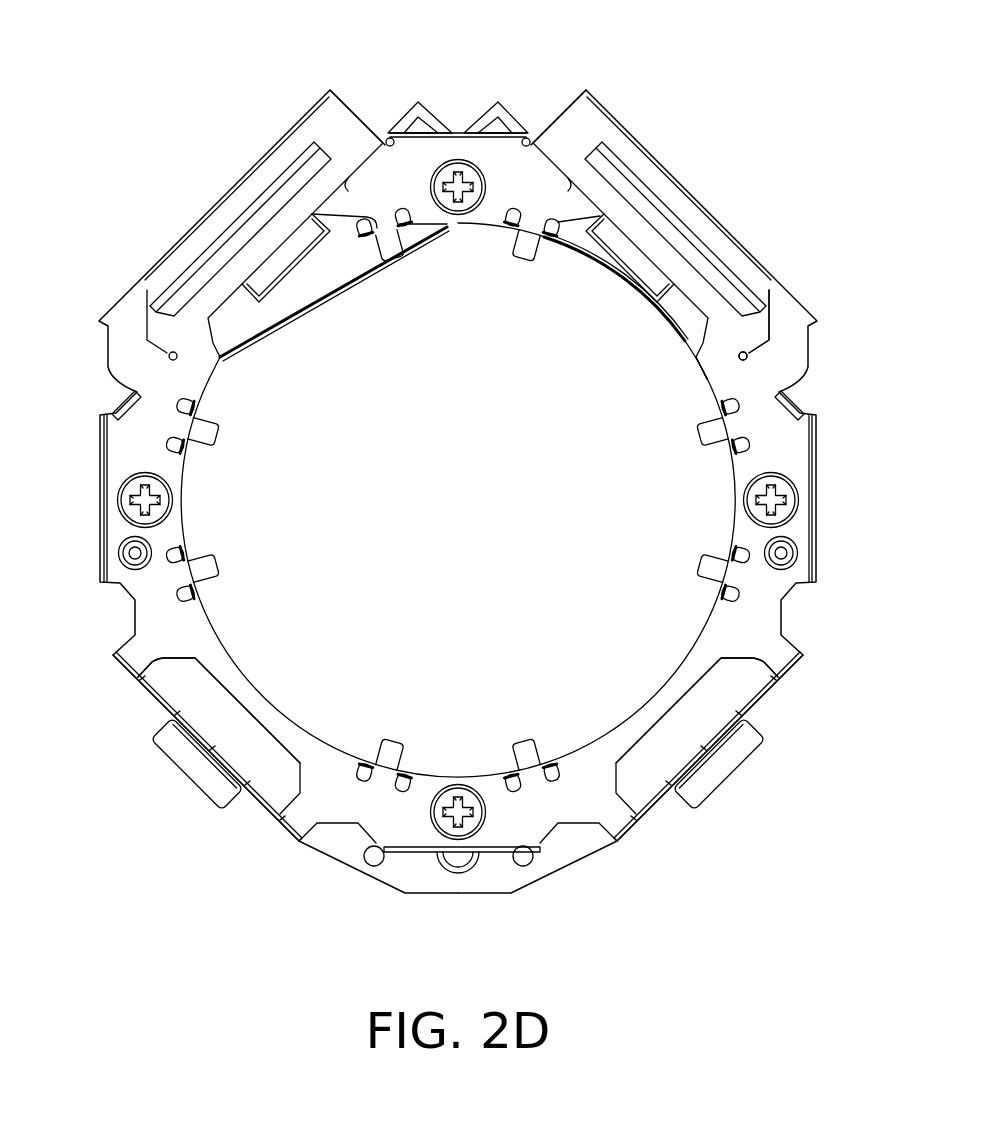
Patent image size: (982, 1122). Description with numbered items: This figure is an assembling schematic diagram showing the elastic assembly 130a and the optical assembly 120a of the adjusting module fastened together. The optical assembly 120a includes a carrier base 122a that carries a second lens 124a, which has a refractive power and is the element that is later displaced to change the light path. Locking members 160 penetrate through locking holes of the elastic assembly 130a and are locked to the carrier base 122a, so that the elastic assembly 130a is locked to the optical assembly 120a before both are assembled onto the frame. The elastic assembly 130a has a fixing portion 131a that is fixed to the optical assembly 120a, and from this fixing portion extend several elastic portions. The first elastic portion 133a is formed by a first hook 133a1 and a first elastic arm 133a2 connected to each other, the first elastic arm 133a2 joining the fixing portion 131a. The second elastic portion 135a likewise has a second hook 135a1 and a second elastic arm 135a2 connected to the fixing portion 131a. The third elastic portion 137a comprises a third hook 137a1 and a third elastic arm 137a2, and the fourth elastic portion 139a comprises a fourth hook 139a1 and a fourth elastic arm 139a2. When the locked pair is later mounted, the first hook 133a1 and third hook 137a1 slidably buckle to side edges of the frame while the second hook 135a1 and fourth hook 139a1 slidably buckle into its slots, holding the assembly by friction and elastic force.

The elastic assembly 130a is at (458, 491).
The optical assembly 120a is at (458, 500).
The carrier base 122a is at (507, 112).
The second lens 124a is at (652, 357).
The fixing portion 131a is at (720, 357).
The first elastic portion 133a is at (746, 50).
The first hook 133a1 is at (633, 158).
The first elastic arm 133a2 is at (588, 117).
The second elastic portion 135a is at (285, 882).
The second hook 135a1 is at (202, 790).
The second elastic arm 135a2 is at (264, 808).
The third elastic portion 137a is at (330, 48).
The third hook 137a1 is at (245, 192).
The third elastic arm 137a2 is at (330, 126).
The fourth elastic portion 139a is at (850, 832).
The fourth hook 139a1 is at (732, 771).
The fourth elastic arm 139a2 is at (765, 695).
The locking member 160 is at (459, 163).